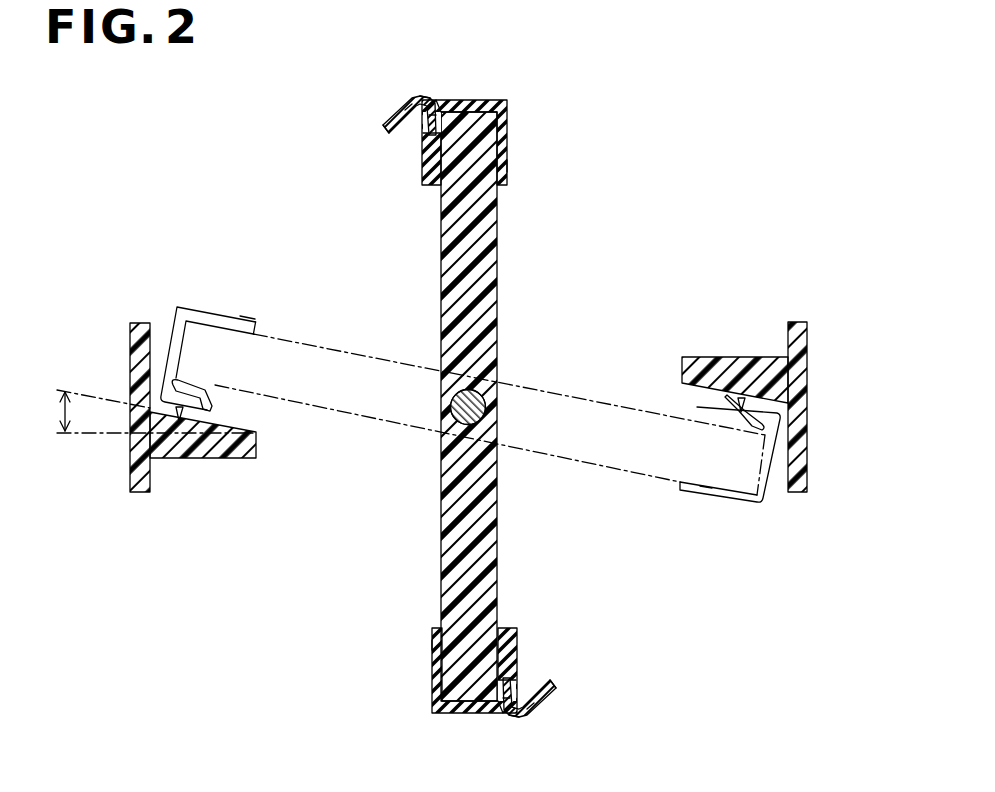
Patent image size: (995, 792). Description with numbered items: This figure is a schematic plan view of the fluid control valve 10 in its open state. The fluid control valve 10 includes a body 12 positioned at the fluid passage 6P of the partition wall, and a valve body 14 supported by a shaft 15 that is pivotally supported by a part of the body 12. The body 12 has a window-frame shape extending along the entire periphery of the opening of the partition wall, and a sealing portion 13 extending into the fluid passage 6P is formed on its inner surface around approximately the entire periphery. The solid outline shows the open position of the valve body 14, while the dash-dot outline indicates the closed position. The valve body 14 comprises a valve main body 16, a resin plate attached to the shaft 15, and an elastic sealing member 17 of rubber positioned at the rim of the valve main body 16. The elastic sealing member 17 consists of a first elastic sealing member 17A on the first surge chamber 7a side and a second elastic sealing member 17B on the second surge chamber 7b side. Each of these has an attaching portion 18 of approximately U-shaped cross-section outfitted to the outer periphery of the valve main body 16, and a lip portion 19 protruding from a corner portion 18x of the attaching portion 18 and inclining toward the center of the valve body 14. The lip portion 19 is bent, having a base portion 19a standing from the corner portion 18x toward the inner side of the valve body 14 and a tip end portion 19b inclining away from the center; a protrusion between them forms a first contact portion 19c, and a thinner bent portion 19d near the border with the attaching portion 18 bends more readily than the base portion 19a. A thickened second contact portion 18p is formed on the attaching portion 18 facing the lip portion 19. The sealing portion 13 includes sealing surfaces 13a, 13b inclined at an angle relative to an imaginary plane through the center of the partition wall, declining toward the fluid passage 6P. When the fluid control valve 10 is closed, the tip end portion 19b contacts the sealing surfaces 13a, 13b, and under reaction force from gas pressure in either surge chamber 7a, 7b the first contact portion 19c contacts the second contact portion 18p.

The fluid control valve 10 is at (737, 150).
The body 12 is at (140, 493).
The sealing portion 13 is at (247, 458).
The sealing surface 13a is at (247, 418).
The sealing surface 13b is at (700, 388).
The valve body 14 is at (572, 362).
The shaft 15 is at (452, 398).
The valve main body 16 is at (445, 556).
The elastic sealing member 17 is at (481, 405).
The first elastic sealing member 17A is at (240, 314).
The second elastic sealing member 17B is at (703, 492).
The attaching portion 18 is at (507, 131).
The second contact portion 18p is at (428, 140).
The corner portion 18x is at (438, 101).
The lip portion 19 is at (383, 122).
The base portion 19a is at (408, 112).
The tip end portion 19b is at (388, 132).
The first contact portion 19c is at (426, 128).
The bent portion 19d is at (423, 96).
The first surge chamber 7a is at (283, 305).
The second surge chamber 7b is at (657, 508).
The fluid passage 6P is at (342, 465).